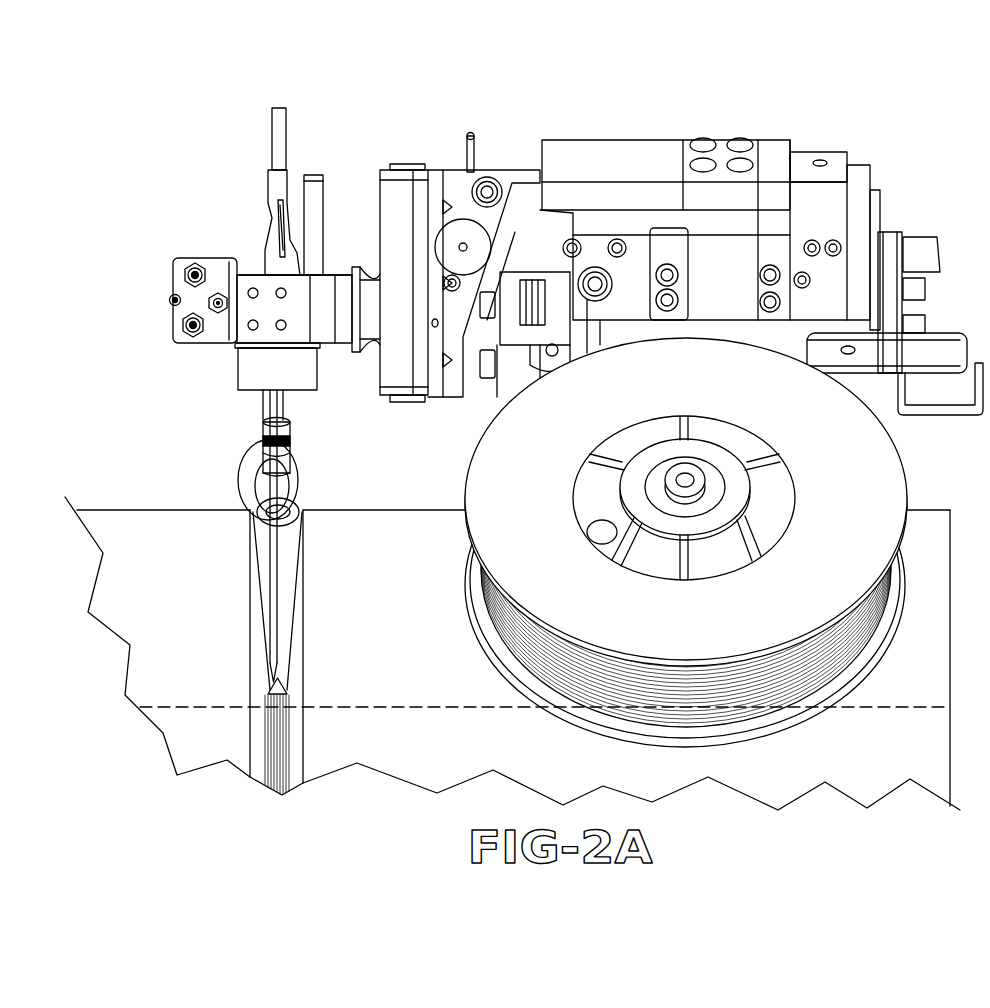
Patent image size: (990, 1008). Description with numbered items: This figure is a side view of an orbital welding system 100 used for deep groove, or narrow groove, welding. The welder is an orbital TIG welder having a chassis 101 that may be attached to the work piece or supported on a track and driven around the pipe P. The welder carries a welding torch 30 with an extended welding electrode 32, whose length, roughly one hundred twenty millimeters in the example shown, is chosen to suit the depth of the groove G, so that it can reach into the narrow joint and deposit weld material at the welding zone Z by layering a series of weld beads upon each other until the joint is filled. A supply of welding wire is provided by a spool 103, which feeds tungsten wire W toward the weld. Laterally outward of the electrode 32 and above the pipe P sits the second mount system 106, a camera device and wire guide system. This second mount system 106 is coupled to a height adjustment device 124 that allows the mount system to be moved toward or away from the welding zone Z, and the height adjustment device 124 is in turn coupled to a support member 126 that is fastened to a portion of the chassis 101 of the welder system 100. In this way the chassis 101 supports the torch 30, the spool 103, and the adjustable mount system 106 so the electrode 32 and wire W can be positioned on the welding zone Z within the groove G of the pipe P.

The welding system 100 is at (148, 152).
The welding torch 30 is at (234, 250).
The welding electrode 32 is at (278, 620).
The chassis 101 is at (398, 207).
The spool 103 is at (865, 478).
The second mount system 106 is at (242, 477).
The height adjustment device 124 is at (266, 328).
The support member 126 is at (332, 273).
The pipe P is at (125, 587).
The groove G is at (253, 733).
The welding zone Z is at (298, 678).
The tungsten wire W is at (868, 610).